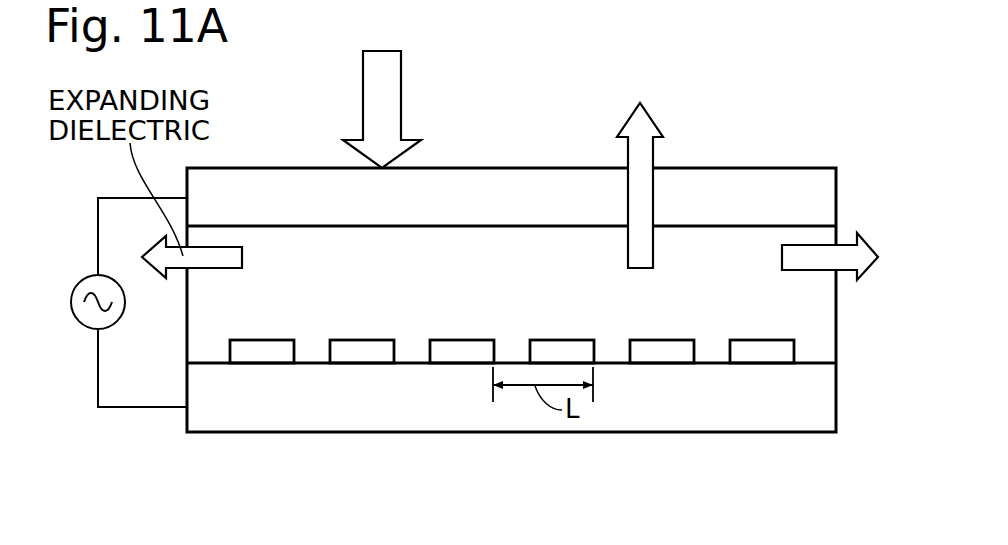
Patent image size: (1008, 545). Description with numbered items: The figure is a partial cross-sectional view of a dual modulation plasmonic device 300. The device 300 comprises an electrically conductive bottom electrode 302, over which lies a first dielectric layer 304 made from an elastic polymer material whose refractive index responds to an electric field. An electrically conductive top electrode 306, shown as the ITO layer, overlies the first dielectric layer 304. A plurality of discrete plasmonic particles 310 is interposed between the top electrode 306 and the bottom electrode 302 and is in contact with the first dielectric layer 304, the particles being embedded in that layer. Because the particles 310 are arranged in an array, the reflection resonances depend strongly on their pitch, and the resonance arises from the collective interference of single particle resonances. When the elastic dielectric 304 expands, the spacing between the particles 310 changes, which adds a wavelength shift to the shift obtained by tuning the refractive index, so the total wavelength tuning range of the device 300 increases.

The device 300 is at (771, 113).
The bottom electrode 302 is at (453, 408).
The first dielectric layer 304 is at (539, 262).
The top electrode 306 is at (827, 198).
The plasmonic particles 310 is at (350, 340).